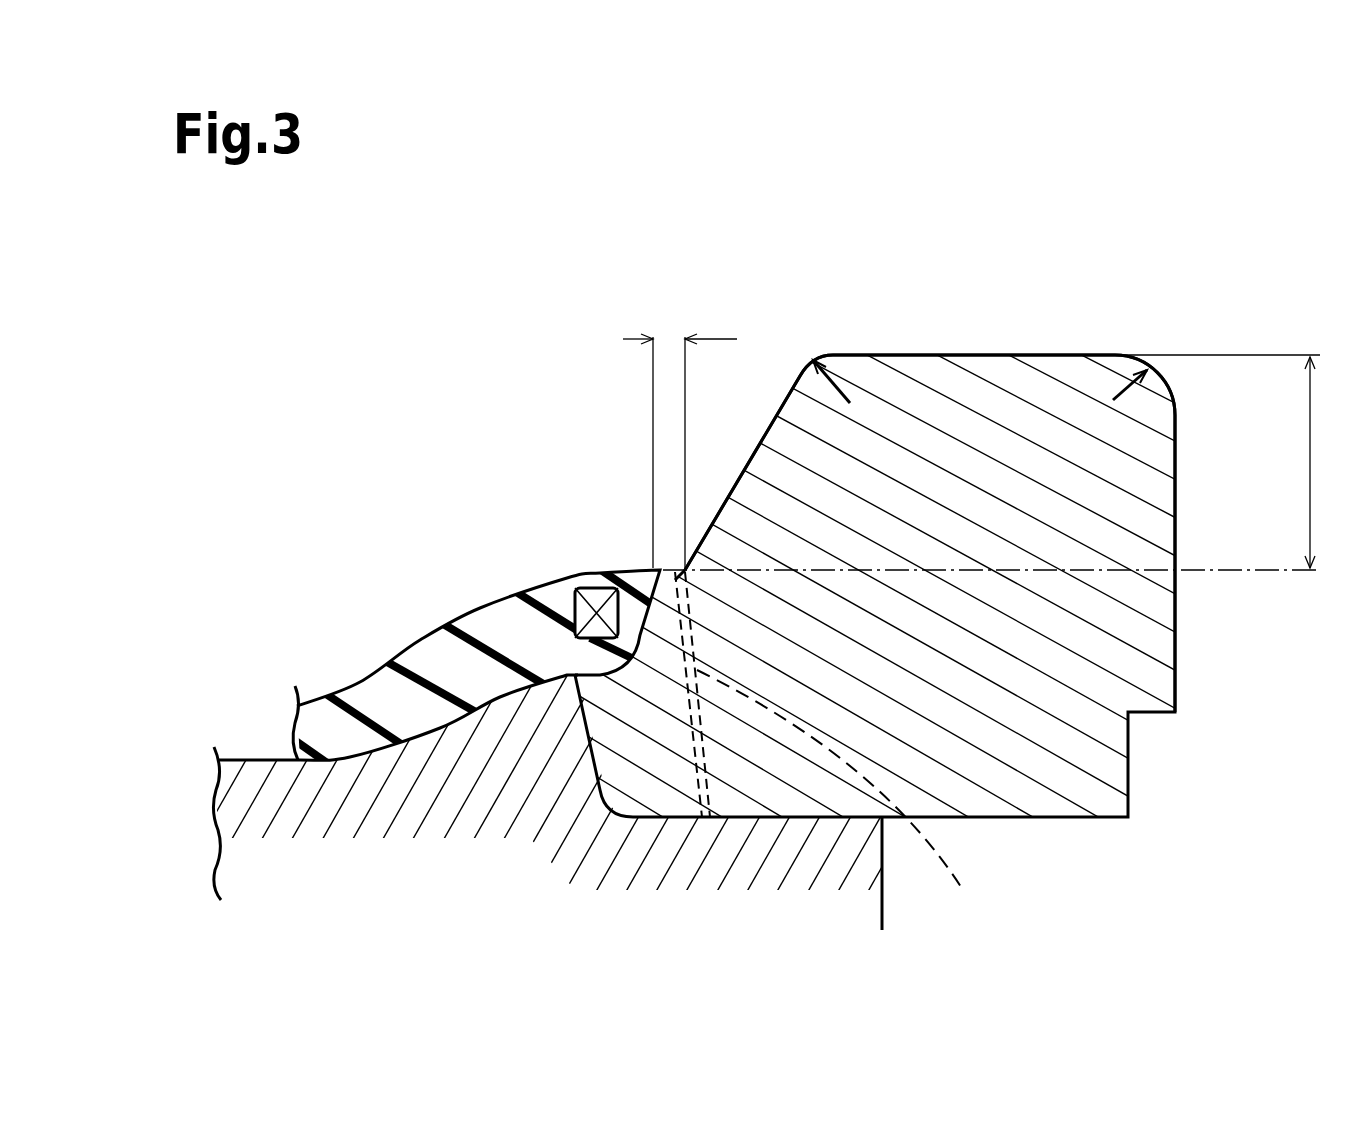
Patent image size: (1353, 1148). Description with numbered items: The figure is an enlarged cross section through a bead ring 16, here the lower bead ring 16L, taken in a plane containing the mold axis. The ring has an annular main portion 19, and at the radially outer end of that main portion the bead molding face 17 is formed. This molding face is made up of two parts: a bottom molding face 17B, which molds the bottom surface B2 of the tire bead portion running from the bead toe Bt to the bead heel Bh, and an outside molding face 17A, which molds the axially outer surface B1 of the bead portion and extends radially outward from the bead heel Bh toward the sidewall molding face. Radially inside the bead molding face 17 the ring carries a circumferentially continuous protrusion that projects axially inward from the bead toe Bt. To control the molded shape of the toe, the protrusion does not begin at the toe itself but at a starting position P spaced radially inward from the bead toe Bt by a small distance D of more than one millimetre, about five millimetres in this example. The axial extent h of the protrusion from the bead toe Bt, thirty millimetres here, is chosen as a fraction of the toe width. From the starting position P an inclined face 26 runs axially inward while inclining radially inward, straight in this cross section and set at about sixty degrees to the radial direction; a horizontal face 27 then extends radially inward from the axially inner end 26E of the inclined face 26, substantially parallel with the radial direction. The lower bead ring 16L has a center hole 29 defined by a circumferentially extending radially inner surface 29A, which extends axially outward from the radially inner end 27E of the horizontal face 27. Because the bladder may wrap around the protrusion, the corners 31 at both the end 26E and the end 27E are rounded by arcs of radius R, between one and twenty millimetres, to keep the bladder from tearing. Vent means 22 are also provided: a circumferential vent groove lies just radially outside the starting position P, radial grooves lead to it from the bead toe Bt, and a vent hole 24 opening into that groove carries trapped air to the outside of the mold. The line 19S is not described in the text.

The bead molding face 17 is at (470, 613).
The outside molding face 17A is at (523, 597).
The bottom molding face 17B is at (610, 573).
The annular main portion 19 is at (1117, 735).
The reference surface line 19S is at (1233, 570).
The inclined face 26 is at (767, 423).
The axially inner end of the inclined face 26E is at (845, 311).
The horizontal face 27 is at (927, 353).
The radially inner end of the horizontal face 27E is at (1120, 350).
The corner 31 is at (802, 355).
The center hole 29 is at (1257, 563).
The radially inner surface 29A is at (1177, 643).
The lower bead ring 16L is at (707, 795).
The bead ring 16 is at (1088, 827).
The vent hole 24 is at (846, 752).
The vent means 22 is at (846, 752).
The distance D is at (680, 436).
The axial extent of the protrusion h is at (1215, 461).
The radius of curvature R is at (847, 380).
The starting position P is at (692, 548).
The bead toe Bt is at (652, 563).
The axially outer surface of the tire bead portion B1 is at (576, 680).
The bead heel Bh is at (618, 676).
The bottom surface of the tire bead portion B2 is at (675, 578).